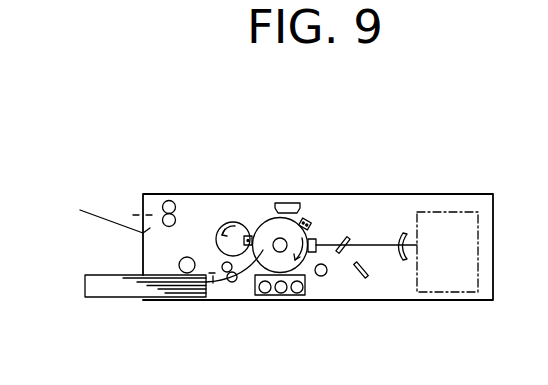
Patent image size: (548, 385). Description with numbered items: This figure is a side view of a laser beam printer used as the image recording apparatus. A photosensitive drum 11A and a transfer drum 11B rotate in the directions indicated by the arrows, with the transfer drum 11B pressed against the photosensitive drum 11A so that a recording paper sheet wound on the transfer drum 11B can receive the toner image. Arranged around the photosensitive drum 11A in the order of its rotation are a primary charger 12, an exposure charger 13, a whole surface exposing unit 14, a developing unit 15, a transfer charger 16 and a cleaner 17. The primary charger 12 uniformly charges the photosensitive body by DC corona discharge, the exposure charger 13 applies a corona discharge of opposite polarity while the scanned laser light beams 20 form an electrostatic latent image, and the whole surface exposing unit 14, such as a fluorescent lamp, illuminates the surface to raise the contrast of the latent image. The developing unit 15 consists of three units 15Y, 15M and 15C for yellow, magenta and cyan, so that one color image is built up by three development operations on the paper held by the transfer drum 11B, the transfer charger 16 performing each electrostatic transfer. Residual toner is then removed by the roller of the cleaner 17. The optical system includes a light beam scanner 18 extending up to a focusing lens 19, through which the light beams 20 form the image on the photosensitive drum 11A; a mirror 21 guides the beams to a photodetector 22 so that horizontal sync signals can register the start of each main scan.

The photosensitive drum 11A is at (272, 219).
The transfer drum 11B is at (240, 224).
The primary charger 12 is at (308, 220).
The exposure charger 13 is at (316, 240).
The whole surface exposing unit 14 is at (326, 275).
The developing unit 15 is at (257, 284).
The yellow developing unit 15Y is at (262, 295).
The magenta developing unit 15M is at (278, 296).
The cyan developing unit 15C is at (300, 296).
The transfer charger 16 is at (245, 235).
The cleaner 17 is at (288, 203).
The light beam scanner 18 is at (463, 288).
The focusing lens 19 is at (405, 262).
The light beams 20 is at (402, 234).
The mirror 21 is at (348, 240).
The photodetector 22 is at (366, 275).